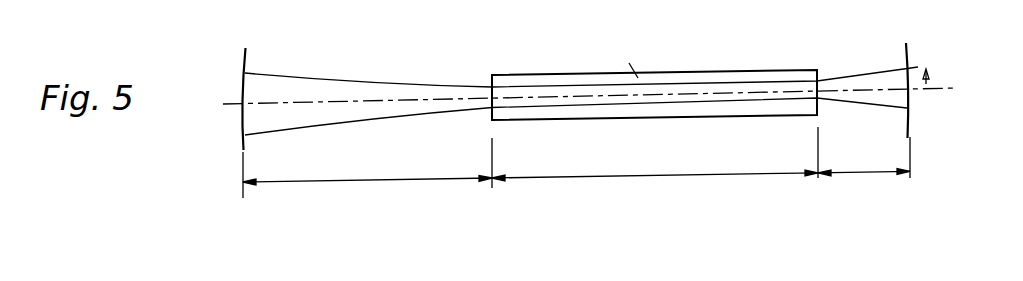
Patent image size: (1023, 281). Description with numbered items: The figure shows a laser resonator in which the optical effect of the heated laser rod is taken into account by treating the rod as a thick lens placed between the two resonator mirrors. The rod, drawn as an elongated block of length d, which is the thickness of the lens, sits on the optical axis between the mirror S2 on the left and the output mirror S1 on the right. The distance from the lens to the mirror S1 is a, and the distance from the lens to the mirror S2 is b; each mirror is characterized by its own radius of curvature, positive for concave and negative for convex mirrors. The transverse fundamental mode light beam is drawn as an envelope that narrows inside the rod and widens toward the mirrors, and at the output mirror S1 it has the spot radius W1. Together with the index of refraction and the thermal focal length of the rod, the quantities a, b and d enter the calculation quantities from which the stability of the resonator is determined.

The output mirror S1 is at (912, 58).
The mirror S2 is at (242, 82).
The spot radius W1 is at (932, 78).
The distance between the lens and the mirror S1 a is at (864, 157).
The distance between the lens and the mirror S2 b is at (367, 175).
The length of the laser rod d is at (655, 157).